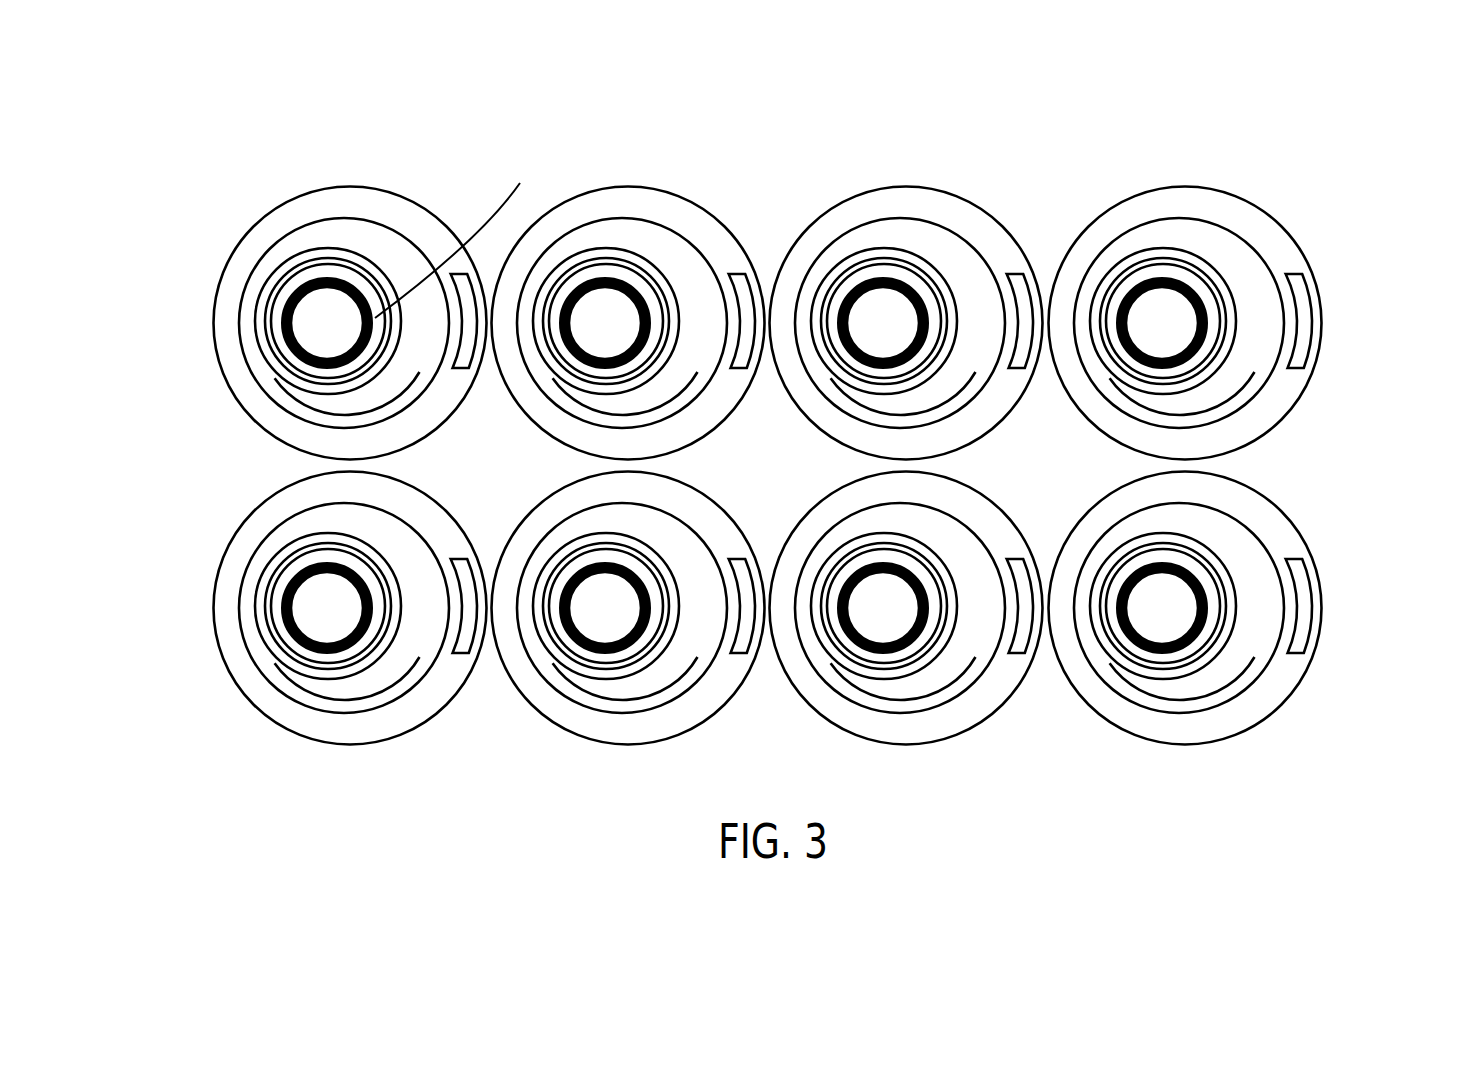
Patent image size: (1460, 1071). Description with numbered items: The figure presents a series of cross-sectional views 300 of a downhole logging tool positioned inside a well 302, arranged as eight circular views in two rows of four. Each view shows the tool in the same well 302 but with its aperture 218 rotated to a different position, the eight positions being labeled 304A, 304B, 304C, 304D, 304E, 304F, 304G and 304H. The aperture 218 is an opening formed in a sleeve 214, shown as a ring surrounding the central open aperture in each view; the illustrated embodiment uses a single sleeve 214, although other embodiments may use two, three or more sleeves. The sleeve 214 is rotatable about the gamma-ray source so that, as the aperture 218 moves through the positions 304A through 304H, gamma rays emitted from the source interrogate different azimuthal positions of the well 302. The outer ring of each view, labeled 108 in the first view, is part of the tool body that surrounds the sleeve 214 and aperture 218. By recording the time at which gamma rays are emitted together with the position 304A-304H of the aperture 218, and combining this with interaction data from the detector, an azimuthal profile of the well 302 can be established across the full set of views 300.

The cross-sectional views 300 is at (1352, 95).
The well 302 is at (224, 434).
The aperture position 304A is at (206, 254).
The aperture position 304B is at (725, 197).
The aperture position 304C is at (1003, 197).
The aperture position 304D is at (1281, 197).
The aperture position 304E is at (430, 744).
The aperture position 304F is at (710, 744).
The aperture position 304G is at (990, 744).
The aperture position 304H is at (1270, 744).
The lens housing 108 is at (350, 299).
The sleeve 214 is at (269, 272).
The aperture 218 is at (386, 382).